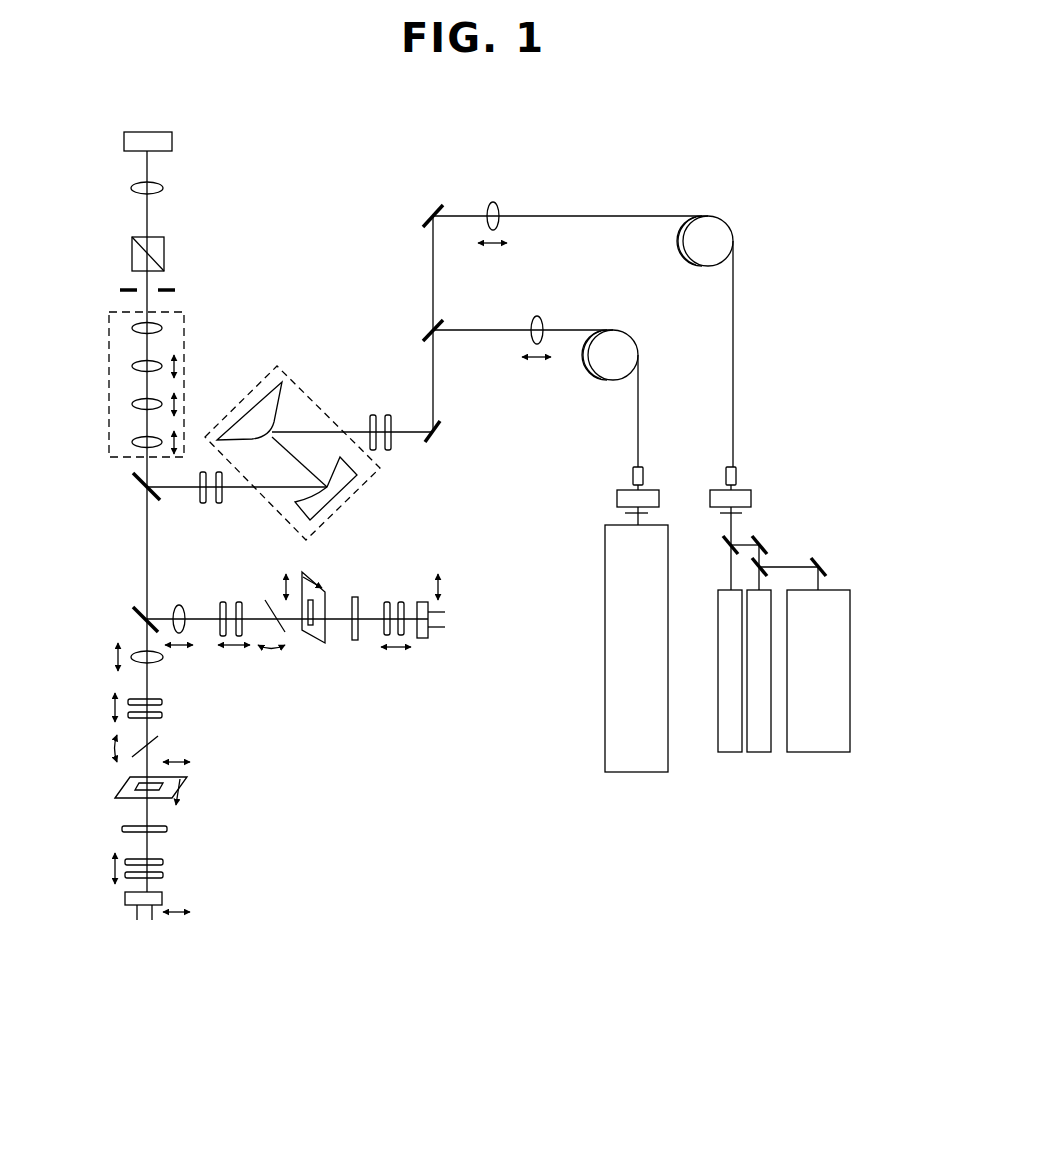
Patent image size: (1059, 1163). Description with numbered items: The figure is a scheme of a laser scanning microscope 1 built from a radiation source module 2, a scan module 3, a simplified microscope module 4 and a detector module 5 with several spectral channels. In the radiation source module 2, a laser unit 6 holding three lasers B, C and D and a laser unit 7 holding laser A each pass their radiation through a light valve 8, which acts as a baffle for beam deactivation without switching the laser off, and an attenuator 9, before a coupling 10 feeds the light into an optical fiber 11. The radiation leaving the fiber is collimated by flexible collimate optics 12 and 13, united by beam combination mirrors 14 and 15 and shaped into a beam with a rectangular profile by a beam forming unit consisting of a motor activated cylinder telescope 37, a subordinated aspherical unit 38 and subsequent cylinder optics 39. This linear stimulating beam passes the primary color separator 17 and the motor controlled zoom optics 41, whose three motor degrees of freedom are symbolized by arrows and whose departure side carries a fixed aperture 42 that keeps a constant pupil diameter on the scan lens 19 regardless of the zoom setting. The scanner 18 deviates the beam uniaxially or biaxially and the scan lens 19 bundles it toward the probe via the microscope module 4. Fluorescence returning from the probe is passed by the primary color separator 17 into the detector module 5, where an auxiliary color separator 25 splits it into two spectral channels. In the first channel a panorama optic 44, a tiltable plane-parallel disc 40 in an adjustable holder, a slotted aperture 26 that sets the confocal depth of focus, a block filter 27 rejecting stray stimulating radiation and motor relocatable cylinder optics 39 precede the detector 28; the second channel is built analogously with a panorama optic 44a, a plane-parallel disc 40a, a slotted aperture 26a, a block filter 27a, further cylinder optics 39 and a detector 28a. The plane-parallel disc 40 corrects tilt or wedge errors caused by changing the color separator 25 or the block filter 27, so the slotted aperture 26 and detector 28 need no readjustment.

The laser scanning microscope 1 is at (430, 868).
The radiation source module 2 is at (875, 800).
The scan module 3 is at (520, 131).
The microscope module 4 is at (172, 139).
The detector module 5 is at (62, 577).
The laser unit 6 is at (833, 775).
The laser unit 7 is at (605, 742).
The light valve 8 is at (742, 516).
The attenuator 9 is at (751, 498).
The coupling 10 is at (736, 477).
The optical fiber 11 is at (733, 355).
The collimate optics 12 is at (497, 203).
The collimate optics 13 is at (541, 317).
The beam combination mirror 14 is at (422, 218).
The beam combination mirror 15 is at (422, 332).
The primary color separator 17 is at (133, 485).
The scanner 18 is at (132, 255).
The scan lens 19 is at (160, 186).
The auxiliary color separator 25 is at (133, 618).
The slotted aperture 26 is at (310, 648).
The slotted aperture 26a is at (188, 796).
The block filter 27 is at (355, 642).
The block filter 27a is at (168, 830).
The detector 28 is at (425, 640).
The detector 28a is at (125, 895).
The cylinder telescope 37 is at (368, 398).
The aspherical unit 38 is at (347, 500).
The cylinder optics 39 is at (195, 518).
The plane-parallel disc 40 is at (262, 600).
The plane-parallel disc 40a is at (150, 746).
The zoom optics 41 is at (109, 390).
The aperture 42 is at (170, 291).
The panorama optic 44 is at (183, 604).
The panorama optic 44a is at (158, 661).